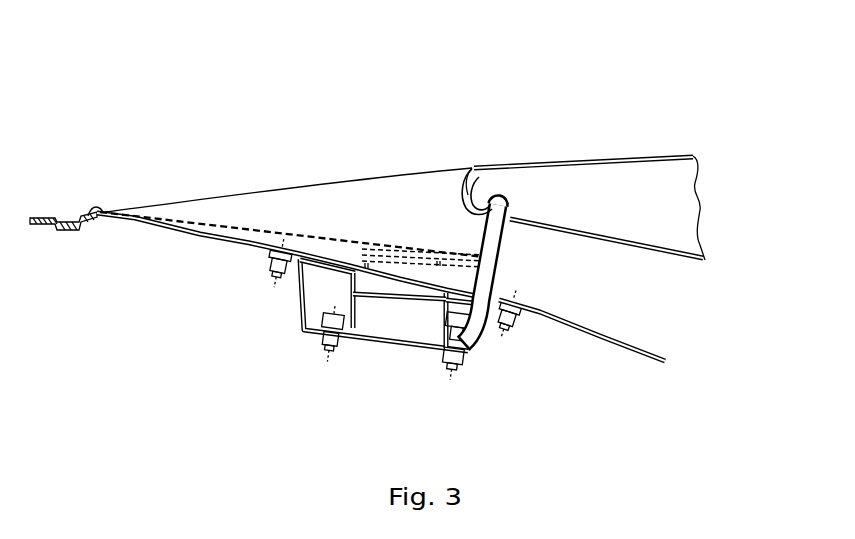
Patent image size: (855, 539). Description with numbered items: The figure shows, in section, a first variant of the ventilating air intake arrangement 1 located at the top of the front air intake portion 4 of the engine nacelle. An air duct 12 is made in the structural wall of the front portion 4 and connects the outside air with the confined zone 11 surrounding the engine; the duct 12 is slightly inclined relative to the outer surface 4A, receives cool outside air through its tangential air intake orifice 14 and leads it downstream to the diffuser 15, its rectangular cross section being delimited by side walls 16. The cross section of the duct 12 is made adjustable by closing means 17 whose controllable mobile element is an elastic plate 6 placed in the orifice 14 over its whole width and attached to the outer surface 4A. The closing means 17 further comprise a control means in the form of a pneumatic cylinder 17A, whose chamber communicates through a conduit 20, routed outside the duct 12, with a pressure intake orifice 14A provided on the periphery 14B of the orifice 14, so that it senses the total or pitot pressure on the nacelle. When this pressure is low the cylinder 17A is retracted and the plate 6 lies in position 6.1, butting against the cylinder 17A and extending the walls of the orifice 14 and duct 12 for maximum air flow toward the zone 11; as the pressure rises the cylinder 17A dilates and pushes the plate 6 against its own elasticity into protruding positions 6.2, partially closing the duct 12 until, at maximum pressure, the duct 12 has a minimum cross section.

The ventilating air intake arrangement 1 is at (145, 121).
The front air intake portion 4 is at (63, 243).
The outer surface 4A is at (80, 212).
The elastic plate 6 is at (347, 245).
The position of the elastic plate 6.1 is at (247, 238).
The protruding positions of the elastic plate 6.2 is at (407, 243).
The confined zone 11 is at (726, 342).
The diffuser 15 is at (688, 310).
The air duct 12 is at (607, 227).
The air intake orifice 14 is at (349, 202).
The pressure intake orifice 14A is at (477, 181).
The periphery of the orifice 14B is at (474, 166).
The side walls 16 is at (593, 335).
The closing means 17 is at (325, 212).
The pneumatic cylinder 17A is at (380, 310).
The conduit 20 is at (491, 261).